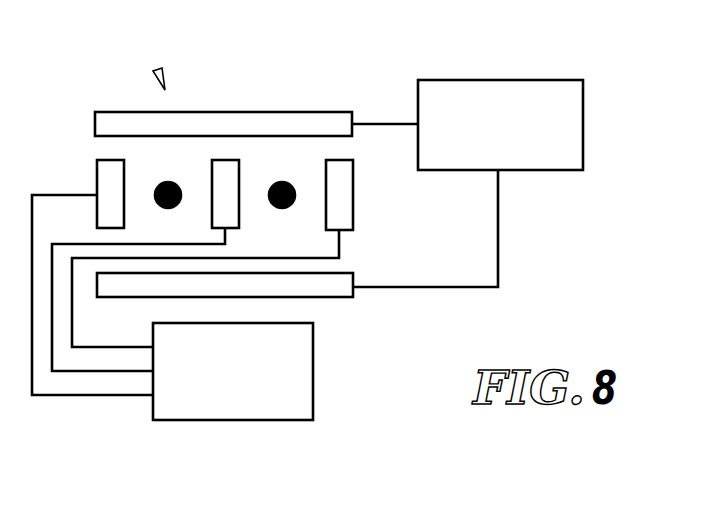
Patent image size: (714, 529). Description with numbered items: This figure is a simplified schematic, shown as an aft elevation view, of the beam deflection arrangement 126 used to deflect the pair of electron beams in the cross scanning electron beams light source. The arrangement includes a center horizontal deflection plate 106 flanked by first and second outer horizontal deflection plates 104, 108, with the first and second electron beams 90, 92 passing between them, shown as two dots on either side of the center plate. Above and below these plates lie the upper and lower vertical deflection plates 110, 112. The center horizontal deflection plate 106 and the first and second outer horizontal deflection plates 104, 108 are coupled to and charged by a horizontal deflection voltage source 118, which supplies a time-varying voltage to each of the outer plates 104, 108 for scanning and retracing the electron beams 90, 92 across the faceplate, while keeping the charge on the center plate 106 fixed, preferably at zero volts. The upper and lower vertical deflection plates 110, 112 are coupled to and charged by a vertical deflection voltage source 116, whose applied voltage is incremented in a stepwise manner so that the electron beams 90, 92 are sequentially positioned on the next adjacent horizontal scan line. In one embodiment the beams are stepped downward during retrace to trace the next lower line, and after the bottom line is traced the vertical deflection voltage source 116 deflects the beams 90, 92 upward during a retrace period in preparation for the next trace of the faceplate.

The first electron beam 90 is at (157, 189).
The second electron beam 92 is at (300, 176).
The first outer horizontal deflection plate 104 is at (88, 190).
The center horizontal deflection plate 106 is at (239, 209).
The second outer horizontal deflection plate 108 is at (345, 205).
The upper vertical deflection plate 110 is at (214, 112).
The lower vertical deflection plate 112 is at (330, 292).
The vertical deflection voltage source 116 is at (522, 170).
The horizontal deflection voltage source 118 is at (313, 365).
The beam deflection arrangement 126 is at (159, 70).